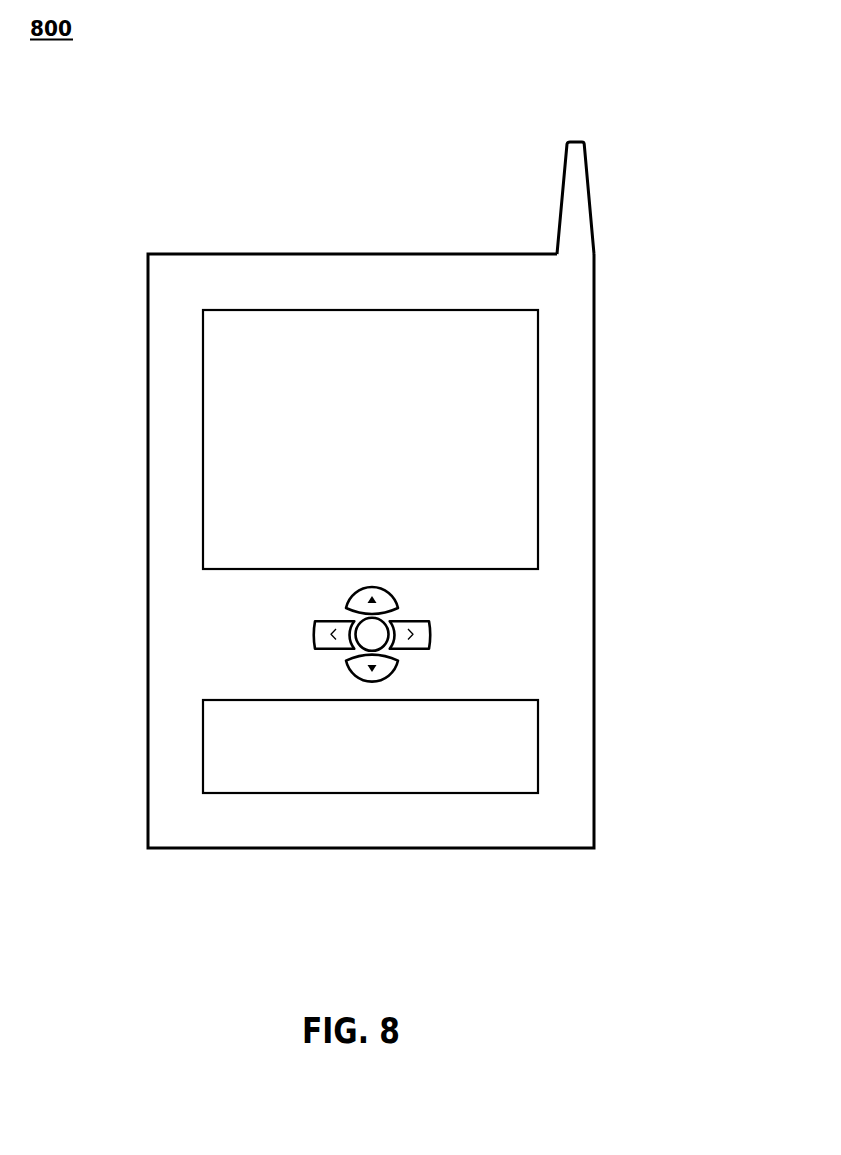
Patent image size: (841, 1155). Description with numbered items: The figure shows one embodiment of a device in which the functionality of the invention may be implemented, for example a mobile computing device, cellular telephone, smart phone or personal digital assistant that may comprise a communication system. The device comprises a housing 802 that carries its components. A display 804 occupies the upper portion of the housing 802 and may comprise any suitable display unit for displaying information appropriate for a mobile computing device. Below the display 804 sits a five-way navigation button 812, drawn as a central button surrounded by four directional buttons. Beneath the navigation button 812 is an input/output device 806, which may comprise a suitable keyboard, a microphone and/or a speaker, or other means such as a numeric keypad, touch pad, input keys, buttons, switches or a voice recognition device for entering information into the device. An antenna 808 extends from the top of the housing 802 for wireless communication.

The housing 802 is at (594, 552).
The display 804 is at (538, 328).
The input/output (I/O) device 806 is at (540, 737).
The antenna 808 is at (558, 190).
The five-way navigation button 812 is at (442, 625).